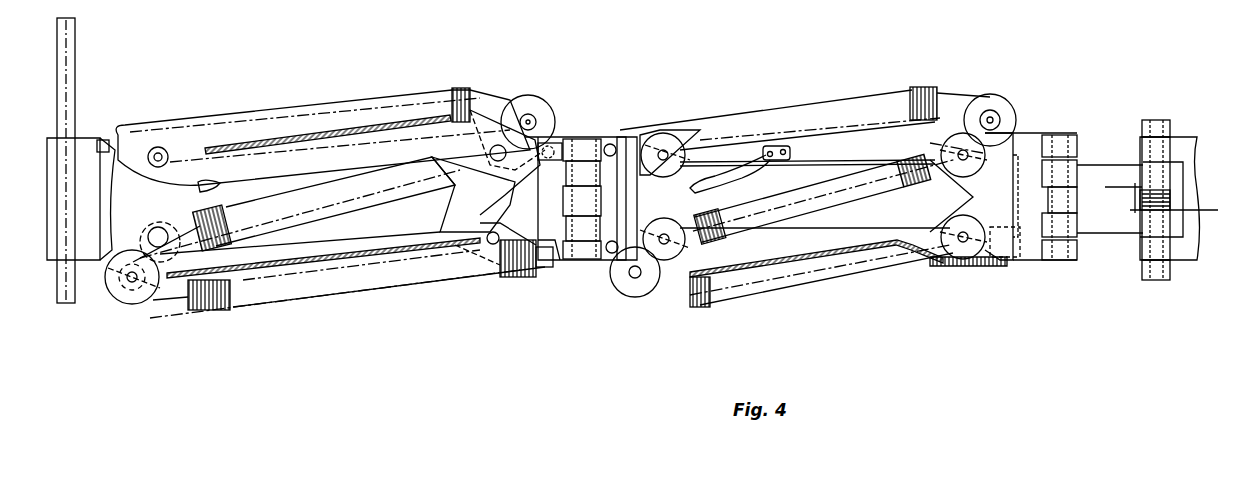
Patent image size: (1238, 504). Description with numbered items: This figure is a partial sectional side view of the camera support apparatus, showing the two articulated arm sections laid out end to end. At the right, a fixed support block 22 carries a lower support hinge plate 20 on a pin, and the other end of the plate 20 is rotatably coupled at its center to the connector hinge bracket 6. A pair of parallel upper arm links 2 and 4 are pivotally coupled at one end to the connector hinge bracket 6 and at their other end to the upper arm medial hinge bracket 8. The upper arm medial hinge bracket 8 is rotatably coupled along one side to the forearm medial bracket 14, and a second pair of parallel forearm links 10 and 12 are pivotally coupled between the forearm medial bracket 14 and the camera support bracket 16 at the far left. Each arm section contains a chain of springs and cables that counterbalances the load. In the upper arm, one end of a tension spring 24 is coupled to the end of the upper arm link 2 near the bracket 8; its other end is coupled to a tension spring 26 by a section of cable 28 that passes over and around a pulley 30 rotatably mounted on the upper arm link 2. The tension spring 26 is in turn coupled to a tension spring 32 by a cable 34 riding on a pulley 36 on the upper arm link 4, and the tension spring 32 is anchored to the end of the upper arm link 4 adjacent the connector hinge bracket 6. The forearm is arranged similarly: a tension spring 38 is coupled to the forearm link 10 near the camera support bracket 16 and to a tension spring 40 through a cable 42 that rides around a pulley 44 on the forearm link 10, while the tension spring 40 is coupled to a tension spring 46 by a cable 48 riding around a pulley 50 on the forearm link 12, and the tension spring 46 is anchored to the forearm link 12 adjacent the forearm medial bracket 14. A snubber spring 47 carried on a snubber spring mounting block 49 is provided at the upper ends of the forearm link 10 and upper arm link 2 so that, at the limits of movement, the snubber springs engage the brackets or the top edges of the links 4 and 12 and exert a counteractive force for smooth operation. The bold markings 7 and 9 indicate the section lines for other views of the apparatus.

The upper arm link 2 is at (820, 130).
The upper arm link 4 is at (710, 252).
The connector hinge bracket 6 is at (1030, 255).
The section line 7 is at (432, 108).
The upper arm medial hinge bracket 8 is at (638, 145).
The section line 9 is at (470, 162).
The forearm link 10 is at (303, 160).
The forearm link 12 is at (345, 245).
The forearm medial bracket 14 is at (545, 168).
The camera support bracket 16 is at (98, 165).
The lower support hinge plate 20 is at (1113, 223).
The fixed support block 22 is at (1180, 258).
The tension spring 24 is at (745, 122).
The tension spring 26 is at (893, 180).
The cable 28 is at (975, 100).
The pulley 30 is at (1005, 117).
The tension spring 32 is at (885, 278).
The cable 34 is at (655, 298).
The pulley 36 is at (612, 283).
The tension spring 38 is at (195, 118).
The tension spring 40 is at (430, 175).
The cable 42 is at (478, 105).
The pulley 44 is at (520, 108).
The tension spring 46 is at (470, 268).
The snubber spring 47 is at (222, 187).
The cable 48 is at (185, 305).
The snubber spring mounting block 49 is at (780, 145).
The pulley 50 is at (123, 302).